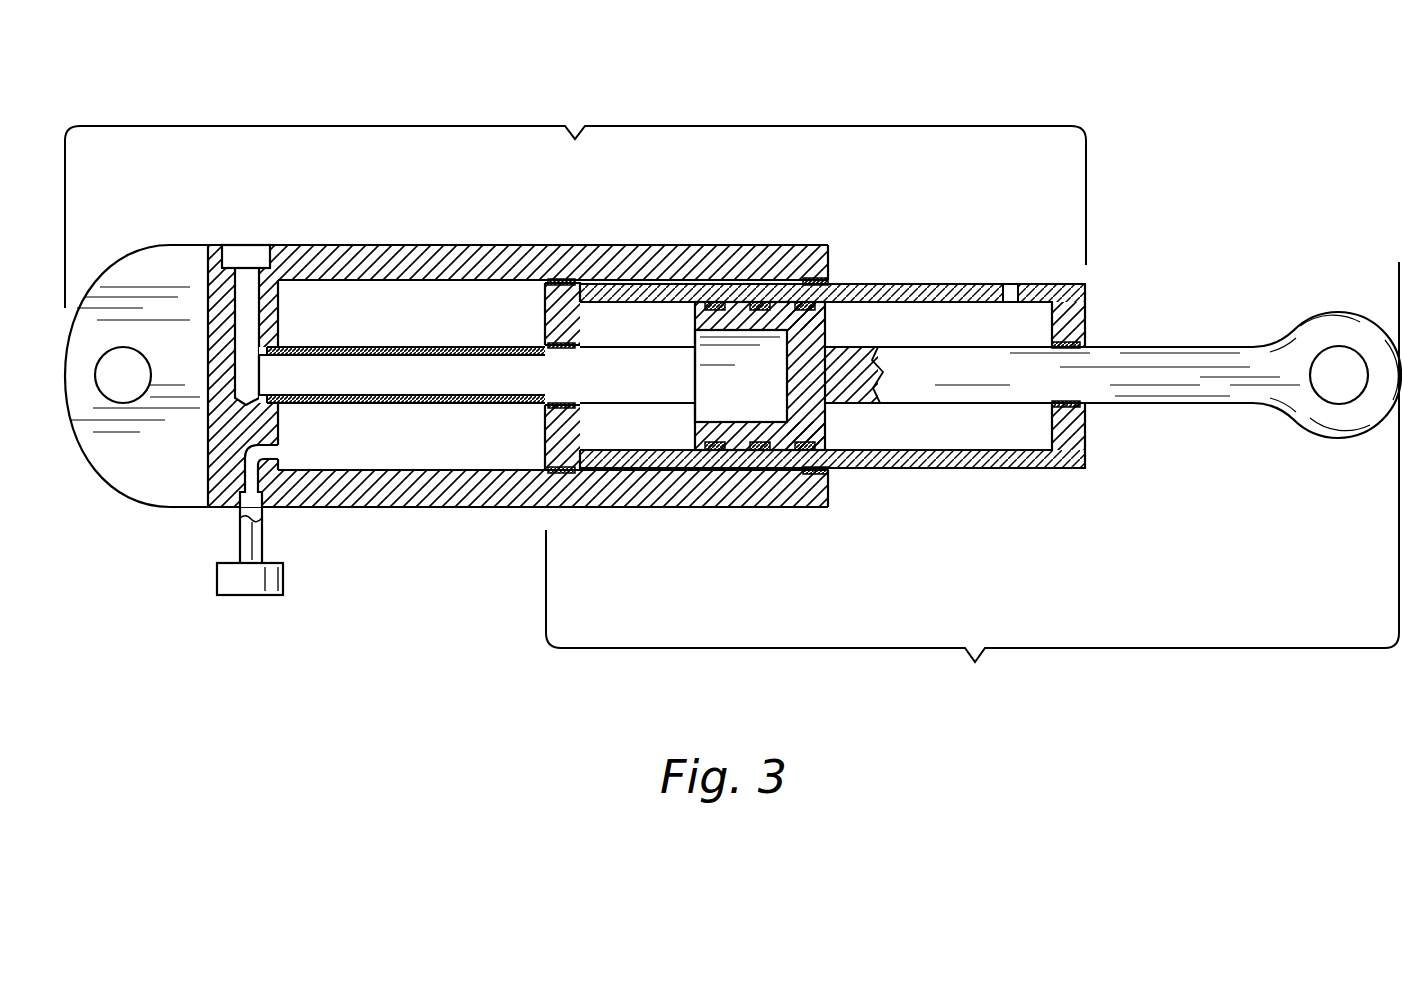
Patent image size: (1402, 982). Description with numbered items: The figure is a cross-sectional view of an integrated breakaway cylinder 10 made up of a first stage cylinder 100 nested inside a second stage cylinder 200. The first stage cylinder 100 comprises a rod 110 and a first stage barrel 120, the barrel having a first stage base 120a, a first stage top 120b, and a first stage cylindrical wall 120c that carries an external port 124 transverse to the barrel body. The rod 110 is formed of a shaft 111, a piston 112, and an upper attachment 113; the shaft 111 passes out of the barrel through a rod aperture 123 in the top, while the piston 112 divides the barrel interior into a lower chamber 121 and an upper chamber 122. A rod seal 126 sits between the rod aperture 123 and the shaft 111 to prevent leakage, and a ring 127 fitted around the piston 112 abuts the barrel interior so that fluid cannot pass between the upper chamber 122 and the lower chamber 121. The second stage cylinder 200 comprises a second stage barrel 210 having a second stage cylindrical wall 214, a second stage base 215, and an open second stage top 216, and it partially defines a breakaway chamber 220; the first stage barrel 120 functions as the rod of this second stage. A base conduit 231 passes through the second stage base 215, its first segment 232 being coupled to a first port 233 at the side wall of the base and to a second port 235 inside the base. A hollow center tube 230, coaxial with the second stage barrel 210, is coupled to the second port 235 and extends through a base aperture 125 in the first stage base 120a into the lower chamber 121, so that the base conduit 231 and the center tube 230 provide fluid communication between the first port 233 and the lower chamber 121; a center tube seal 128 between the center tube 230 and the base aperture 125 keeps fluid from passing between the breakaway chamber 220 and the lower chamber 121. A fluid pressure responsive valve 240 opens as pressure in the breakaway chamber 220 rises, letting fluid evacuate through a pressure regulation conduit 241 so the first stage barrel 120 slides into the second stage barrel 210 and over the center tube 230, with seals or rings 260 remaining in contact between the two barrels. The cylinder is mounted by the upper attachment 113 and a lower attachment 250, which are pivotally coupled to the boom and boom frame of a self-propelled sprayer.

The integrated breakaway cylinder 10 is at (1186, 197).
The first stage cylinder 100 is at (972, 482).
The rod 110 is at (995, 385).
The shaft 111 is at (932, 372).
The piston 112 is at (810, 373).
The upper attachment 113 is at (1343, 372).
The first stage barrel 120 is at (962, 467).
The first stage base 120a is at (545, 435).
The first stage top 120b is at (1065, 445).
The first stage cylindrical wall 120c is at (868, 463).
The lower chamber 121 is at (637, 376).
The upper chamber 122 is at (938, 376).
The rod aperture 123 is at (1075, 367).
The external port 124 is at (1010, 297).
The base aperture 125 is at (600, 295).
The rod seal 126 is at (1062, 410).
The ring 127 is at (802, 300).
The center tube seal 128 is at (543, 345).
The second stage cylinder 200 is at (575, 192).
The second stage barrel 210 is at (670, 507).
The second stage cylindrical wall 214 is at (380, 495).
The second stage base 215 is at (215, 450).
The second stage top 216 is at (830, 272).
The breakaway chamber 220 is at (411, 375).
The center tube 230 is at (453, 347).
The base conduit 231 is at (243, 305).
The first segment 232 is at (280, 322).
The first port 233 is at (245, 262).
The second port 235 is at (270, 375).
The fluid pressure responsive valve 240 is at (255, 577).
The pressure regulation conduit 241 is at (257, 472).
The lower attachment 250 is at (125, 390).
The seals or rings 260 is at (568, 287).